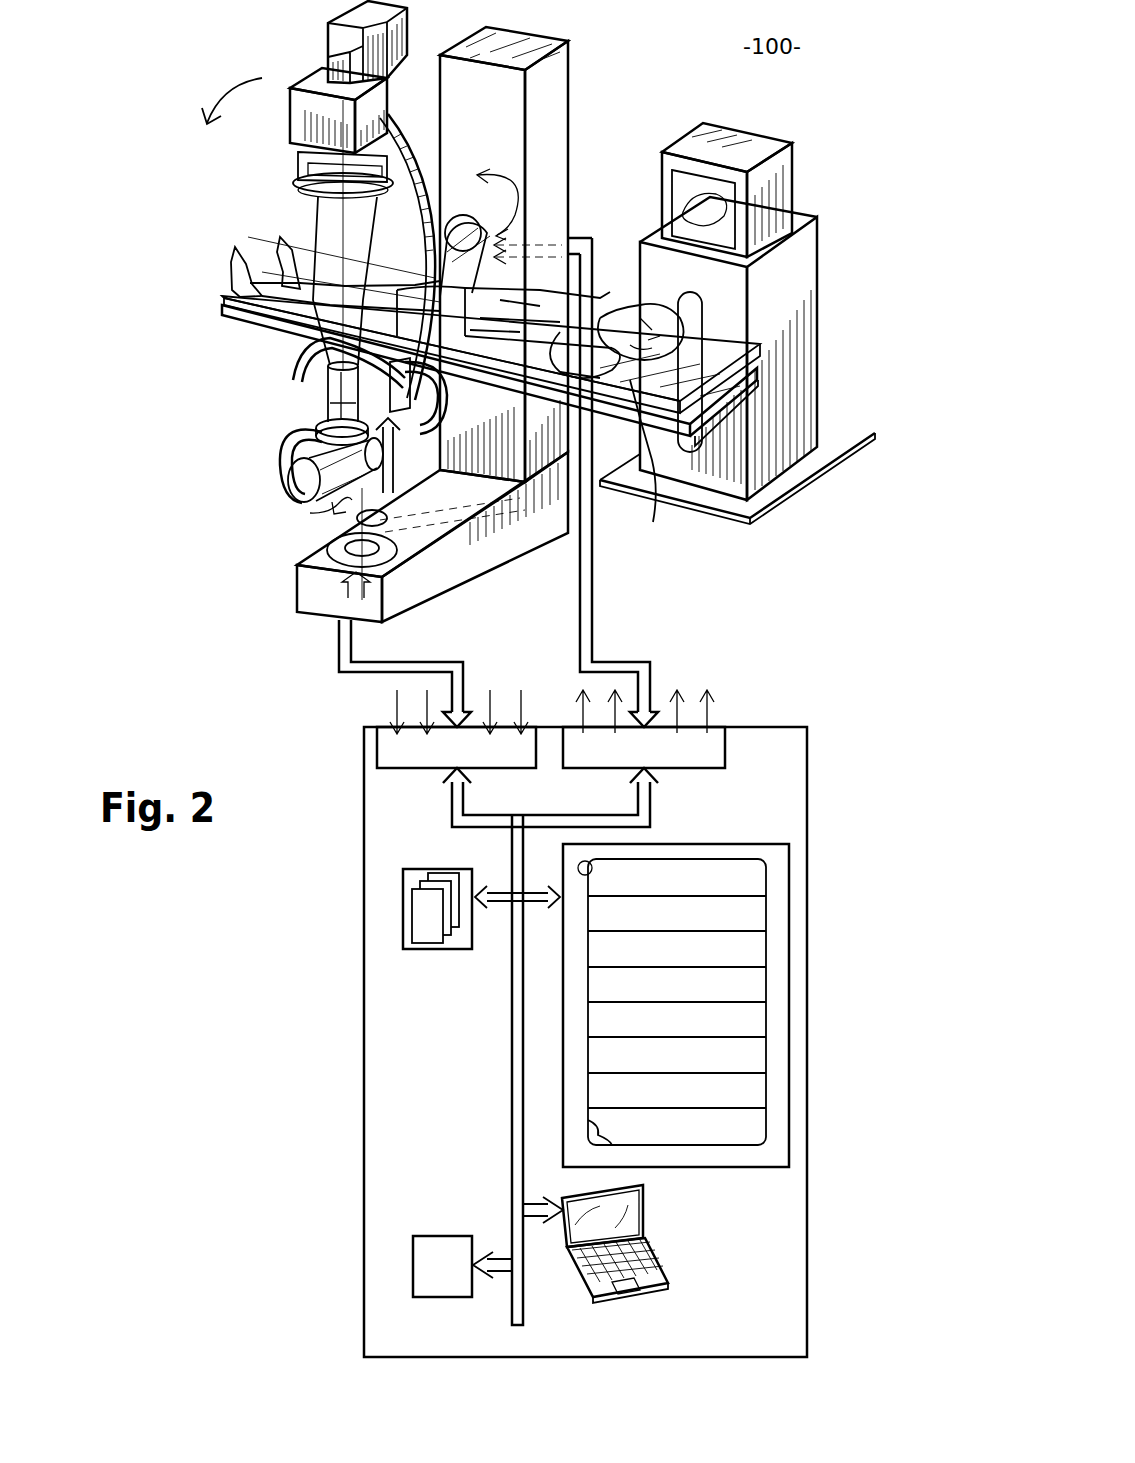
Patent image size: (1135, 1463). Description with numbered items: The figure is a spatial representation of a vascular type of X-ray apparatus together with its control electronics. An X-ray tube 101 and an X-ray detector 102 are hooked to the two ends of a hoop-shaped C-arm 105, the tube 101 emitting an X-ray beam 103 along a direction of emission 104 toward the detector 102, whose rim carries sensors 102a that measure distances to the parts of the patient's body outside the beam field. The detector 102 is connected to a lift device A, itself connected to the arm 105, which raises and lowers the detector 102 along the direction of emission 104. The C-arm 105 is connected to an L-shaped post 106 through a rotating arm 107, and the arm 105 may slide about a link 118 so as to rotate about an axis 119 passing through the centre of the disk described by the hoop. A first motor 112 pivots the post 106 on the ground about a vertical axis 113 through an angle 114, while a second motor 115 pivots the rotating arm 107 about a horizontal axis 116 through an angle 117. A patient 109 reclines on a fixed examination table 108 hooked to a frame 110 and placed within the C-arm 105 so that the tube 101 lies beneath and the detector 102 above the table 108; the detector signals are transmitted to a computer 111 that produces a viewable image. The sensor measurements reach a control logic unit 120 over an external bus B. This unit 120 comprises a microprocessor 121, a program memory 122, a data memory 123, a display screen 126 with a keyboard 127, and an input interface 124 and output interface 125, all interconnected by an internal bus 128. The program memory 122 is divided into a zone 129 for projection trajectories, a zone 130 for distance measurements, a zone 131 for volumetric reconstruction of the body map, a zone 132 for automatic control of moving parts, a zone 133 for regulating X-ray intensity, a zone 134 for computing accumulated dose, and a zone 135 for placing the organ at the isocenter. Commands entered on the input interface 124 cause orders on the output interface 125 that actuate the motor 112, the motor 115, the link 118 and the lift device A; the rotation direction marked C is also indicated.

The X-ray tube 101 is at (298, 490).
The X-ray detector 102 is at (298, 150).
The sensors 102a is at (304, 172).
The X-ray beam 103 is at (326, 366).
The direction of emission 104 is at (332, 228).
The C-arm 105 is at (397, 138).
The L-shaped post 106 is at (553, 93).
The rotating arm 107 is at (593, 282).
The examination table 108 is at (653, 465).
The patient 109 is at (284, 316).
The frame 110 is at (802, 262).
The computer 111 is at (785, 186).
The first motor 112 is at (352, 549).
The vertical axis 113 is at (382, 608).
The angle 114 is at (324, 513).
The second motor 115 is at (462, 220).
The horizontal axis 116 is at (500, 230).
The angle 117 is at (503, 168).
The link 118 is at (436, 395).
The axis 119 is at (266, 226).
The control logic unit 120 is at (364, 948).
The microprocessor 121 is at (448, 1240).
The program memory 122 is at (740, 845).
The data memory 123 is at (453, 950).
The input interface 124 is at (377, 740).
The output interface 125 is at (727, 740).
The display screen 126 is at (632, 1198).
The keyboard 127 is at (648, 1250).
The internal bus 128 is at (512, 1083).
The zone 129 is at (742, 880).
The zone 130 is at (742, 917).
The zone 131 is at (750, 942).
The zone 132 is at (755, 975).
The zone 133 is at (742, 1020).
The zone 134 is at (742, 1056).
The zone 135 is at (750, 1090).
The lift device A is at (300, 98).
The external bus B is at (596, 600).
The rotation direction C is at (232, 96).